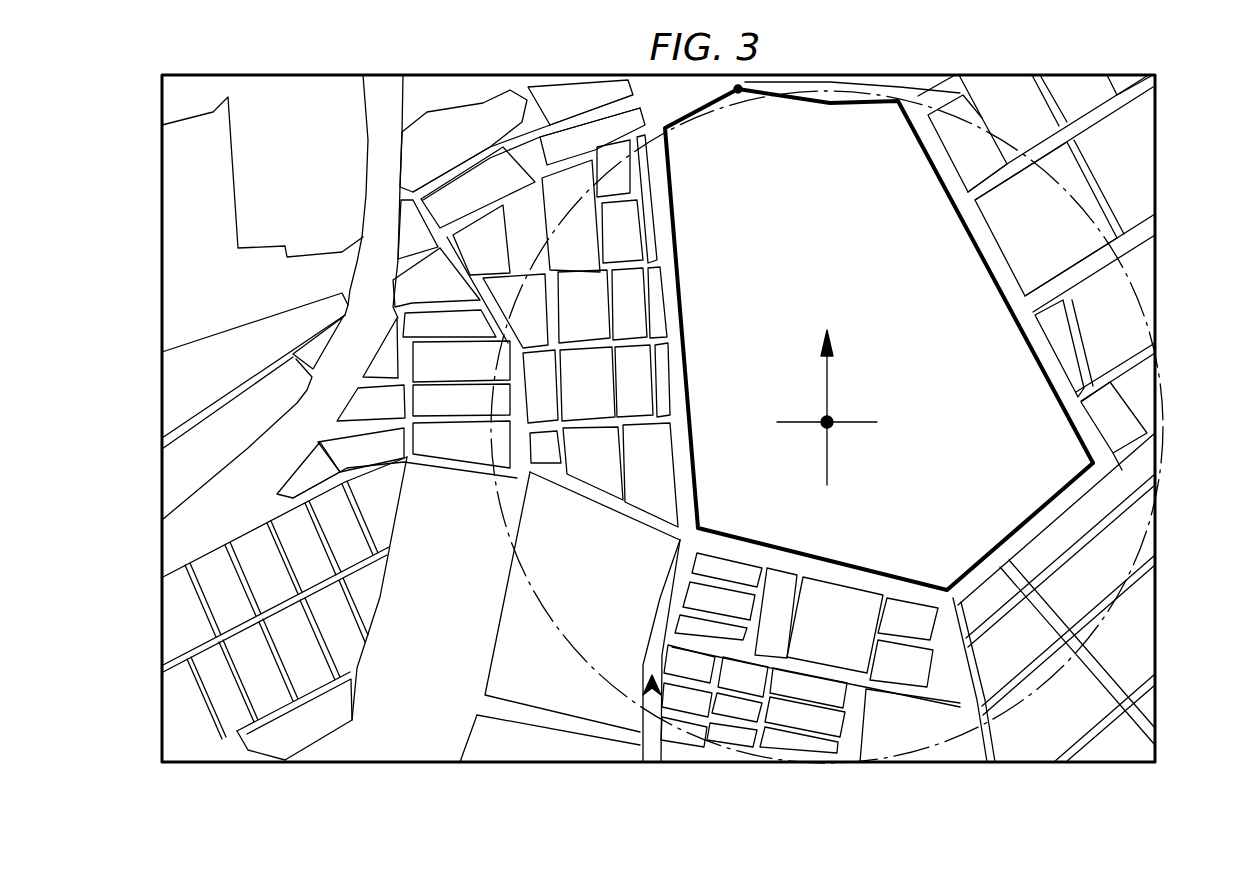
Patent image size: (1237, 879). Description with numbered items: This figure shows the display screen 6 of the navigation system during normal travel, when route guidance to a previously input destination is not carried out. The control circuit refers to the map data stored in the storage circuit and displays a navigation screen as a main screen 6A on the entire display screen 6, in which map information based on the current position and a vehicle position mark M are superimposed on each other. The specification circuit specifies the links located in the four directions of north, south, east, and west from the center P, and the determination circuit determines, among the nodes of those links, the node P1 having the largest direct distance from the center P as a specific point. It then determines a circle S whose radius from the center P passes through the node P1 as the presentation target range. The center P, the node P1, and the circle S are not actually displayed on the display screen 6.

The display screen 6 is at (1157, 550).
The main screen 6A is at (407, 750).
The node P1 is at (741, 95).
The center P is at (827, 391).
The circle S is at (1012, 714).
The vehicle position mark M is at (663, 688).